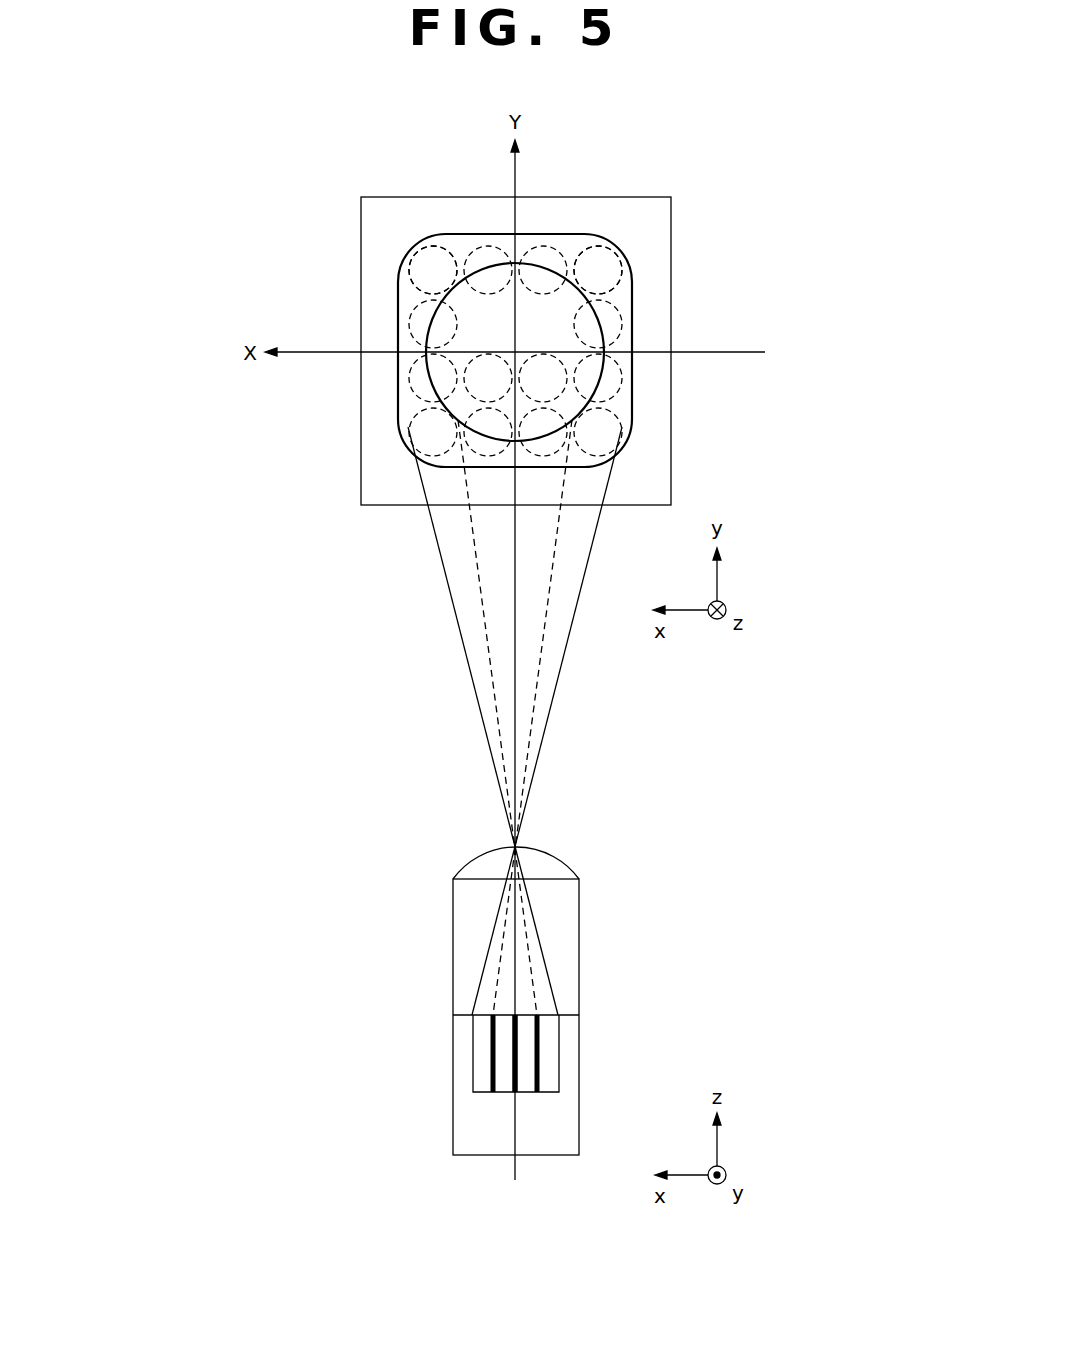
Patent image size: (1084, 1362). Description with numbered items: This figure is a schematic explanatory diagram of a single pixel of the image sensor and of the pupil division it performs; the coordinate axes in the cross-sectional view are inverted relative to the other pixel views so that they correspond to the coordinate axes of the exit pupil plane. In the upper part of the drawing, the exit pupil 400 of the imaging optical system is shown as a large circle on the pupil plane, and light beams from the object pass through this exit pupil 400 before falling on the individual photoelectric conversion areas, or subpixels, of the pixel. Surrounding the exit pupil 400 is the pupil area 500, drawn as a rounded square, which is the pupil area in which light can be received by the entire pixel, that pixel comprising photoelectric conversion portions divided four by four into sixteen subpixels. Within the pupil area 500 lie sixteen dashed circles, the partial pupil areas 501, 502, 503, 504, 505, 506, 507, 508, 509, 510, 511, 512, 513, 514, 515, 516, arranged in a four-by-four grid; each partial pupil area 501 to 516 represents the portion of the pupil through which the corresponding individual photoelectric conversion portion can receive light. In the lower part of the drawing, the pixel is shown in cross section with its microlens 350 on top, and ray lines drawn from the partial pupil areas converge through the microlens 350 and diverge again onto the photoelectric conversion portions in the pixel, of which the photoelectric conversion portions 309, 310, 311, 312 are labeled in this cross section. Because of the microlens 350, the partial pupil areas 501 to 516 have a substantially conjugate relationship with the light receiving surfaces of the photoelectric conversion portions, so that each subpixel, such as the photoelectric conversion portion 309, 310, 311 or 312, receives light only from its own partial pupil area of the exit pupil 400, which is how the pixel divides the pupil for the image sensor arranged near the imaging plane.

The exit pupil 400 is at (596, 294).
The pupil area 500 is at (403, 262).
The partial pupil area 501 is at (433, 432).
The partial pupil area 502 is at (488, 432).
The partial pupil area 503 is at (543, 432).
The partial pupil area 504 is at (598, 432).
The partial pupil area 505 is at (433, 378).
The partial pupil area 506 is at (488, 378).
The partial pupil area 507 is at (543, 378).
The partial pupil area 508 is at (598, 378).
The partial pupil area 509 is at (433, 324).
The partial pupil area 510 is at (409, 283).
The partial pupil area 511 is at (622, 283).
The partial pupil area 512 is at (598, 324).
The partial pupil area 513 is at (433, 268).
The partial pupil area 514 is at (488, 268).
The partial pupil area 515 is at (543, 268).
The partial pupil area 516 is at (598, 268).
The microlens 350 is at (470, 862).
The photoelectric conversion portion 309 is at (559, 1041).
The photoelectric conversion portion 310 is at (527, 1092).
The photoelectric conversion portion 311 is at (503, 1092).
The photoelectric conversion portion 312 is at (473, 1041).